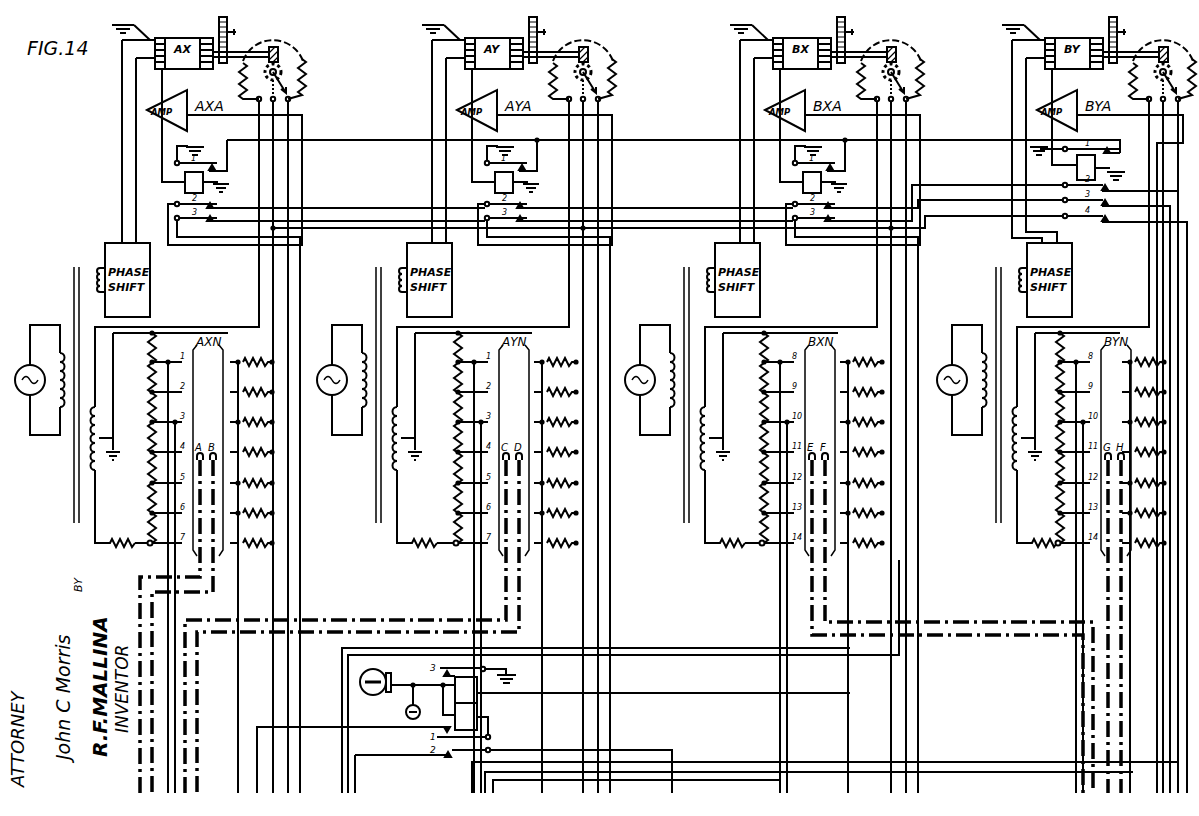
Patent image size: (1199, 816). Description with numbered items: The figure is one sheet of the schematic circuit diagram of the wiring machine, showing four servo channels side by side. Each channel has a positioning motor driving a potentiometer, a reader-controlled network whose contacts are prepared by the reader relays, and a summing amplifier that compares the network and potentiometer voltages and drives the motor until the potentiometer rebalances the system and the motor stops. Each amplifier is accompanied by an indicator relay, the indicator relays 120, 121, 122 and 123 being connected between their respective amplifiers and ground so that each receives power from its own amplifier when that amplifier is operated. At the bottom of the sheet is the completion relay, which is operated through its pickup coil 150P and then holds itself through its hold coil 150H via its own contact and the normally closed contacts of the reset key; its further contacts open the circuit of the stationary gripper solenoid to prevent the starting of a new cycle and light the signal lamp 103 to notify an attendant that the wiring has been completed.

The indicator relay 120 is at (183, 186).
The indicator relay 121 is at (493, 186).
The indicator relay 122 is at (801, 186).
The indicator relay 123 is at (1077, 173).
The signal lamp 103 is at (365, 695).
The pickup coil 150P is at (478, 700).
The hold coil 150H is at (470, 710).